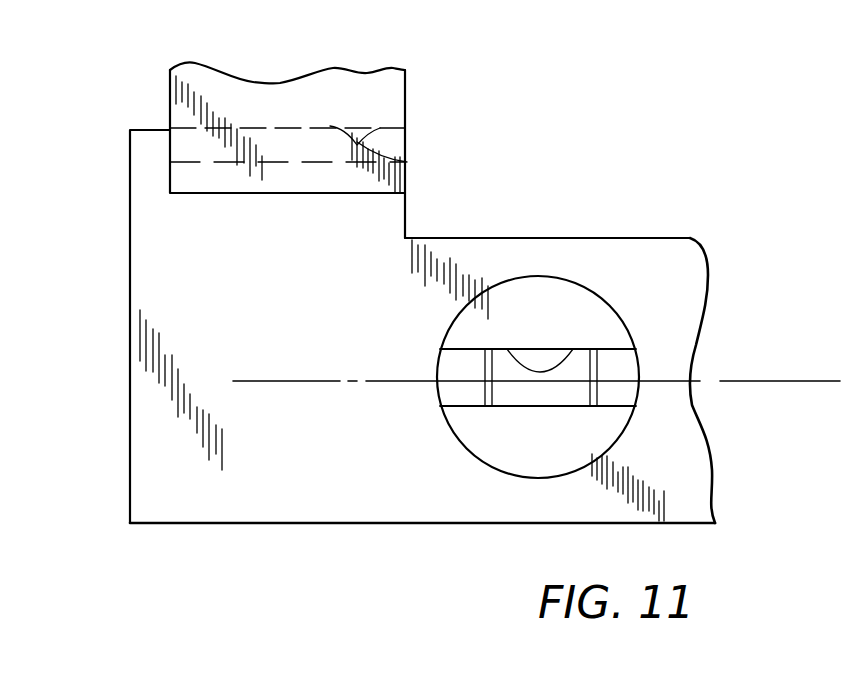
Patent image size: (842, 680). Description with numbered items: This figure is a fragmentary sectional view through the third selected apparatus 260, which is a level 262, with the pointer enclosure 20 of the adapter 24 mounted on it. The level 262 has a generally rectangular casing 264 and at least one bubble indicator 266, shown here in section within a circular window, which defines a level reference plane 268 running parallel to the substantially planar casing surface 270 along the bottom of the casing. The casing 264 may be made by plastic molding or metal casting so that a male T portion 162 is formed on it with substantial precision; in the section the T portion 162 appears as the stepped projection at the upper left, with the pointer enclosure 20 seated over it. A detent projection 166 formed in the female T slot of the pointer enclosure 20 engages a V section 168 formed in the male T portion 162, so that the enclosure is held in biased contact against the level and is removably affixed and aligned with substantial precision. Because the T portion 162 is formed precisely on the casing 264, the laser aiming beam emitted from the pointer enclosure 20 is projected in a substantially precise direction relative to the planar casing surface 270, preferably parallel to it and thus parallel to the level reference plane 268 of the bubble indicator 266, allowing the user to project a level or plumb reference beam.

The adapter 24 is at (168, 64).
The pointer enclosure 20 is at (170, 95).
The male T portion 162 is at (170, 148).
The detent projection 166 is at (357, 130).
The V section 168 is at (397, 161).
The third selected apparatus 260 is at (130, 263).
The level 262 is at (146, 378).
The casing 264 is at (561, 236).
The bubble indicator 266 is at (552, 406).
The level reference plane 268 is at (253, 381).
The planar casing surface 270 is at (290, 525).